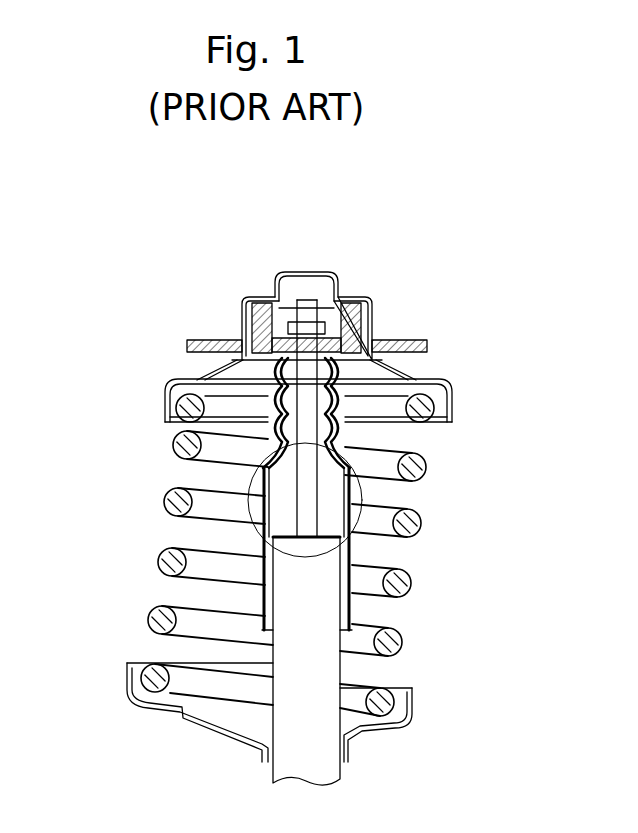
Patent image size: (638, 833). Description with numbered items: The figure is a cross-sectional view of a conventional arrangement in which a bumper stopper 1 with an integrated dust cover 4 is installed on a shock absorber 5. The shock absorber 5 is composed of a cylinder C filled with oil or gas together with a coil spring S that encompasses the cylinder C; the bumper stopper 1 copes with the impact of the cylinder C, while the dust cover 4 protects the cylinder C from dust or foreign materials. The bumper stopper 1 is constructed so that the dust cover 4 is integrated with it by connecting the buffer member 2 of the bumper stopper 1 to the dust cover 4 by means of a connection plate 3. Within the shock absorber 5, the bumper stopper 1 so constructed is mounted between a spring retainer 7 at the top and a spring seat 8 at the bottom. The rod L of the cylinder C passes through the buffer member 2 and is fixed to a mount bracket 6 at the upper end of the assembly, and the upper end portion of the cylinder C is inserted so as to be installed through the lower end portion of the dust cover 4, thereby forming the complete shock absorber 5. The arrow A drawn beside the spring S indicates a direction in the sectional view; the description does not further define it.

The shock absorber 5 is at (304, 242).
The mount bracket 6 is at (356, 297).
The bumper stopper 1 is at (358, 407).
The spring retainer 7 is at (180, 378).
The connection plate 3 is at (338, 448).
The buffer member 2 is at (275, 408).
The rod L is at (303, 478).
The rotation direction A is at (407, 498).
The coil spring S is at (160, 550).
The dust cover 4 is at (353, 545).
The cylinder C is at (323, 675).
The spring seat 8 is at (385, 728).